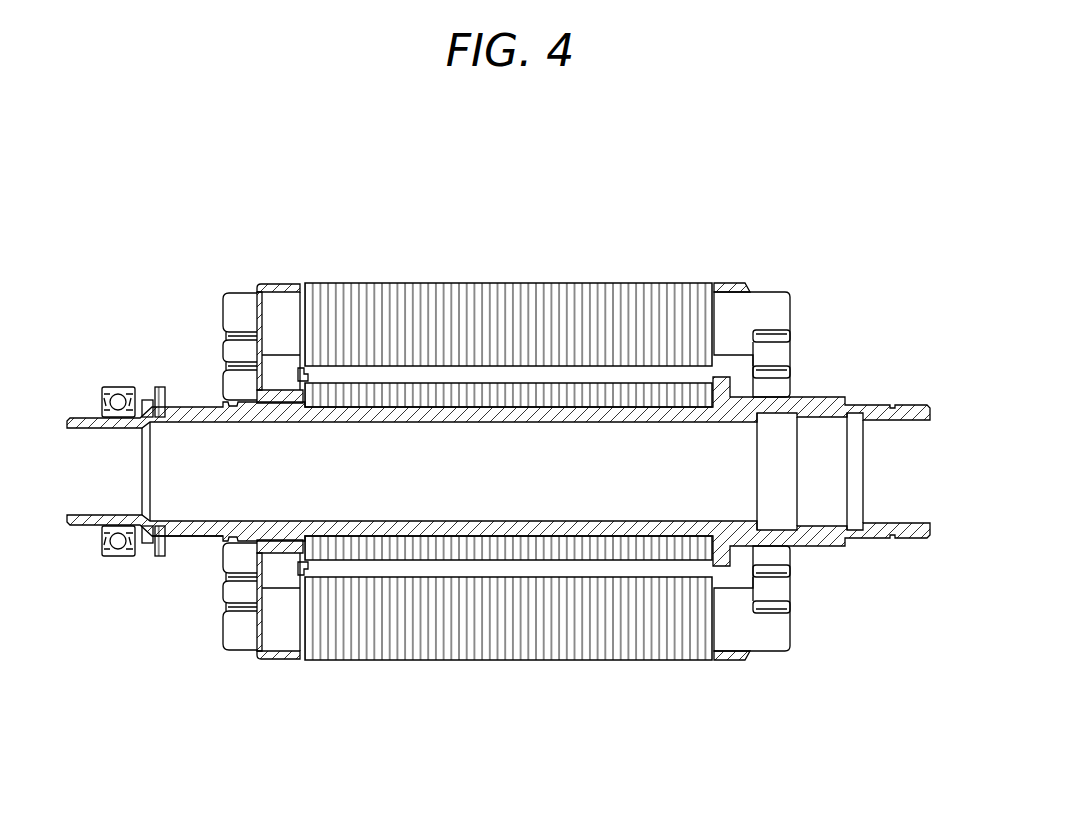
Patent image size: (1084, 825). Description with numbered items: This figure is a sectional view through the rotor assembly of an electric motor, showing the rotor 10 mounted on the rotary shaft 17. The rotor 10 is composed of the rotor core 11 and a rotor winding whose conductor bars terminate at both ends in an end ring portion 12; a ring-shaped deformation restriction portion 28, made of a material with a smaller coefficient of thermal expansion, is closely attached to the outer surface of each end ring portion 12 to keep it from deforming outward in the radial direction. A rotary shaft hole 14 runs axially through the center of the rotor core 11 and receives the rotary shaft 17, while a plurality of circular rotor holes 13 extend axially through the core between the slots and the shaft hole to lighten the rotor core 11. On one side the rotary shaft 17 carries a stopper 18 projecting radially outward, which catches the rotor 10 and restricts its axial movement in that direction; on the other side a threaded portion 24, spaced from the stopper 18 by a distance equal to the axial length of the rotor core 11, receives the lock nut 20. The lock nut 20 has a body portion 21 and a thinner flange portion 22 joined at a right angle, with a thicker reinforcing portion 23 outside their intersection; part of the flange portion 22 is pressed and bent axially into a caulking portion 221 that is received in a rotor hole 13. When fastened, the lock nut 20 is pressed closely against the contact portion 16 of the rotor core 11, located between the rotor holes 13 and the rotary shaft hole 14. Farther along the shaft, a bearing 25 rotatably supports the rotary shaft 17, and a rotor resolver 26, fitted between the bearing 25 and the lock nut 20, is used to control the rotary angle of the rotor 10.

The rotor 10 is at (508, 467).
The rotor core 11 is at (446, 283).
The end ring portion 12 is at (250, 293).
The rotor hole 13 is at (370, 375).
The rotary shaft hole 14 is at (493, 537).
The contact portion 16 is at (273, 323).
The rotary shaft 17 is at (170, 558).
The stopper 18 is at (720, 568).
The lock nut 20 is at (275, 568).
The body portion 21 is at (231, 573).
The flange portion 22 is at (298, 572).
The caulking portion 221 is at (304, 373).
The reinforcing portion 23 is at (292, 556).
The threaded portion 24 is at (258, 395).
The bearing 25 is at (116, 387).
The rotor resolver 26 is at (158, 388).
The deformation restriction portion 28 is at (284, 285).